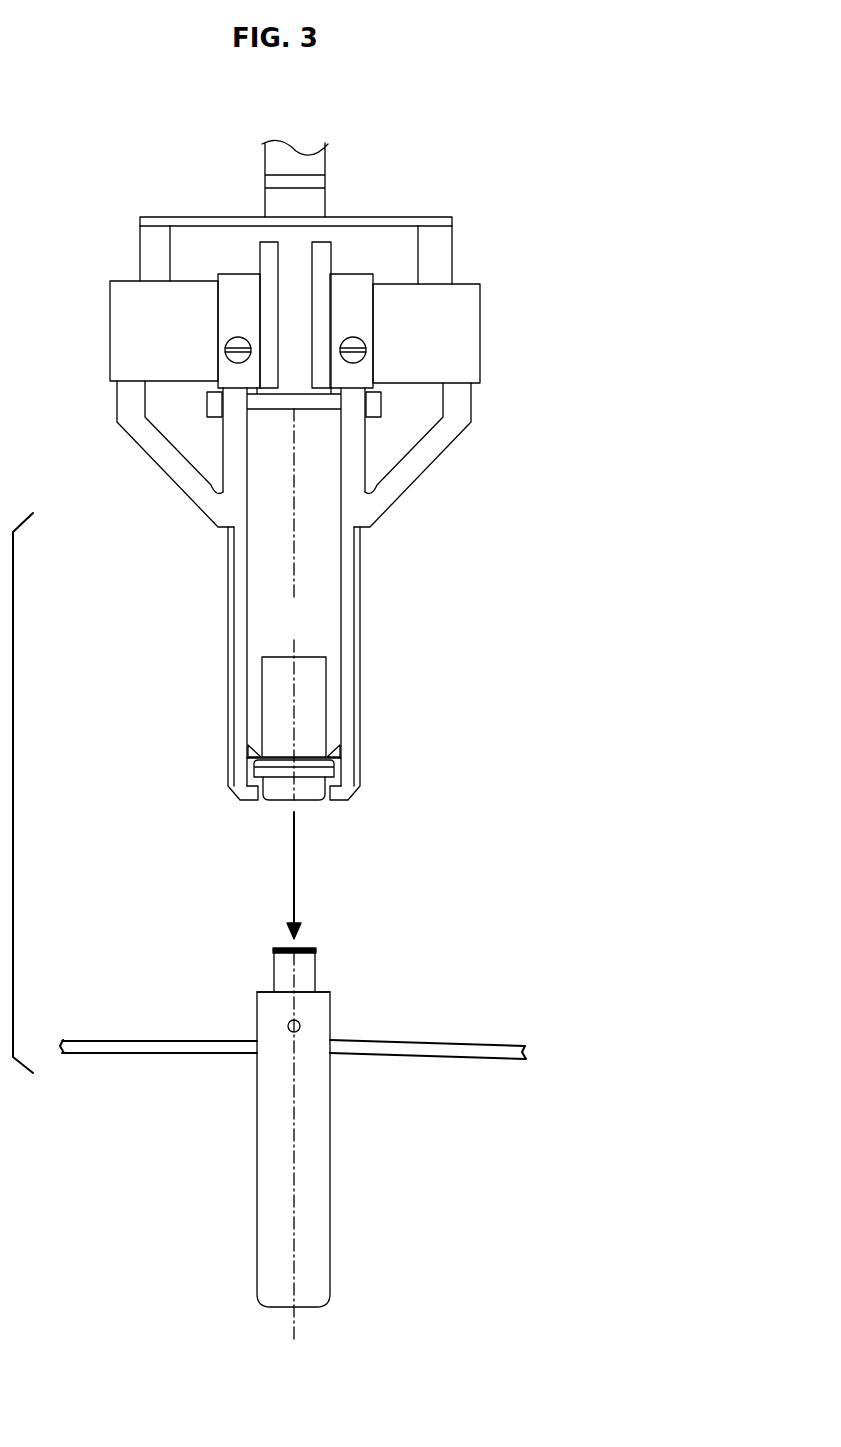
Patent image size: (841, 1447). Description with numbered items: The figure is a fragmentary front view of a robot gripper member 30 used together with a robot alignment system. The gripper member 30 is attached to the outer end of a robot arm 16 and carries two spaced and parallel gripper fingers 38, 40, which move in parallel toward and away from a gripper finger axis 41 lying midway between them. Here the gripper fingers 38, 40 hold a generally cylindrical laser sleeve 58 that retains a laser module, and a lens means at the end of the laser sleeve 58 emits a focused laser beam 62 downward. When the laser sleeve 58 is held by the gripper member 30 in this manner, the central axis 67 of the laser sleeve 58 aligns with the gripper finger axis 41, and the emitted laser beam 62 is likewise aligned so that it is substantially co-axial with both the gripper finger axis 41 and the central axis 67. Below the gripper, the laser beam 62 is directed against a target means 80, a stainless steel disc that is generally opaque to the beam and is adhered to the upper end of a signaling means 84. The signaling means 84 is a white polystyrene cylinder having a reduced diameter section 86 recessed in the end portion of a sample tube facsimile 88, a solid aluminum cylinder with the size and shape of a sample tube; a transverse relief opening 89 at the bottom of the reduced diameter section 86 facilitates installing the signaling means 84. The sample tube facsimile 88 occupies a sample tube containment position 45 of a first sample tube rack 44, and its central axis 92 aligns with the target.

The robot arm 16 is at (325, 168).
The robot gripper member 30 is at (489, 342).
The gripper finger 38 is at (228, 600).
The gripper finger 40 is at (360, 628).
The gripper finger axis 41 is at (297, 573).
The central axis 67 is at (290, 717).
The laser sleeve 58 is at (327, 727).
The focused laser beam 62 is at (295, 874).
The target means 80 is at (305, 947).
The signaling means 84 is at (318, 975).
The reduced diameter section 86 is at (268, 988).
The sample tube facsimile 88 is at (330, 1122).
The transverse relief opening 89 is at (332, 1042).
The sample tube containment position 45 is at (302, 1026).
The first sample tube rack 44 is at (170, 1055).
The central axis 92 is at (295, 1218).